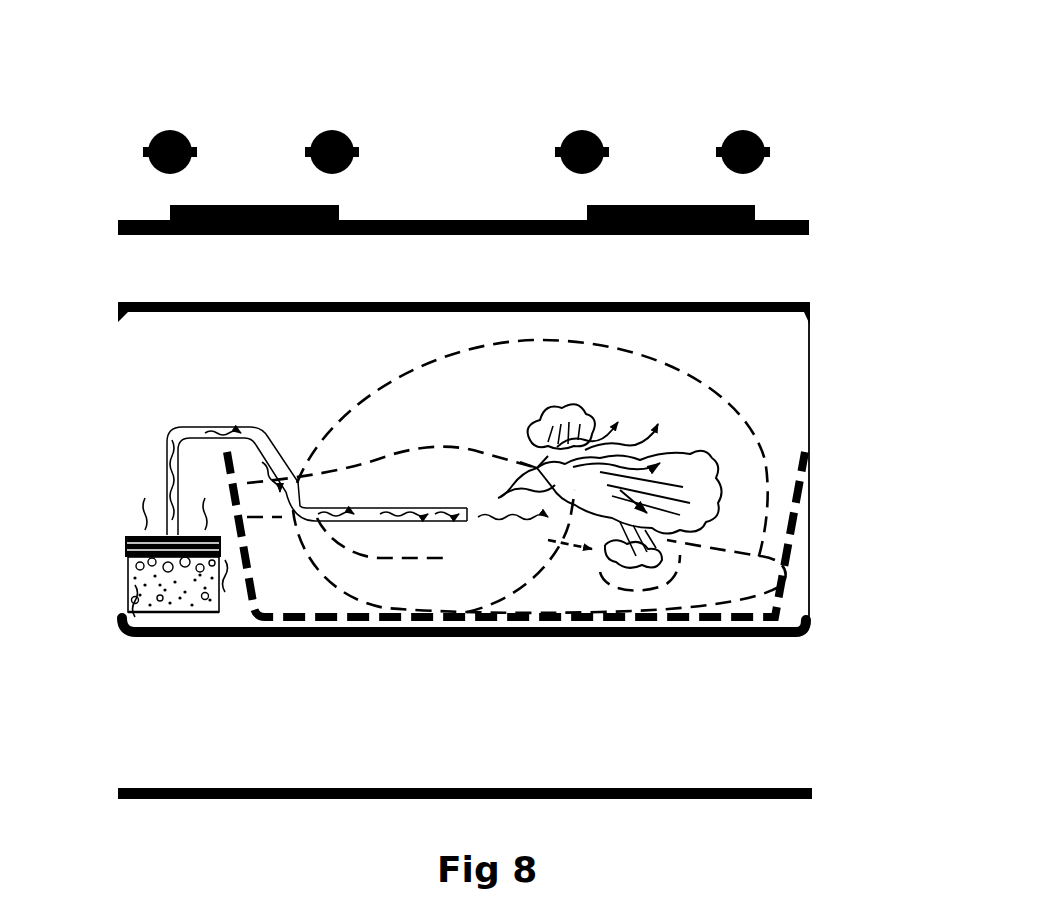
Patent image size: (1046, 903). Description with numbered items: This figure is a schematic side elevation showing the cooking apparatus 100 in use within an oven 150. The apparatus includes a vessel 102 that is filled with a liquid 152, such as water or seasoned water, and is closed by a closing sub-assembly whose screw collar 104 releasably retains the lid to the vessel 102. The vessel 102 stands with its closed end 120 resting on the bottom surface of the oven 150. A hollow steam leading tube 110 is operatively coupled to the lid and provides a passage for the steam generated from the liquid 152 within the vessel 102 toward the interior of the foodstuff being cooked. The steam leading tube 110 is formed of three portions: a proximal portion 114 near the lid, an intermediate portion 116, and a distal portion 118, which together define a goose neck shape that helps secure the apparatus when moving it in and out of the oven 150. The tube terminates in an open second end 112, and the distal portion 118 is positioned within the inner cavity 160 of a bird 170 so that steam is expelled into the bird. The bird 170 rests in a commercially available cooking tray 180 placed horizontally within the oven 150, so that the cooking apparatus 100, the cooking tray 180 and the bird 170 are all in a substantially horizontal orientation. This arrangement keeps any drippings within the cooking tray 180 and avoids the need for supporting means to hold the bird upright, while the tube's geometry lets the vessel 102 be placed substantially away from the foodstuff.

The cooking apparatus 100 is at (830, 367).
The vessel 102 is at (118, 599).
The screw collar 104 is at (125, 545).
The steam leading tube 110 is at (328, 518).
The second end 112 is at (470, 510).
The proximal portion 114 is at (167, 468).
The intermediate portion 116 is at (237, 445).
The distal portion 118 is at (395, 500).
The closed end 120 is at (178, 613).
The oven 150 is at (793, 128).
The liquid 152 is at (158, 585).
The inner cavity 160 is at (474, 548).
The bird 170 is at (653, 358).
The cooking tray 180 is at (398, 612).